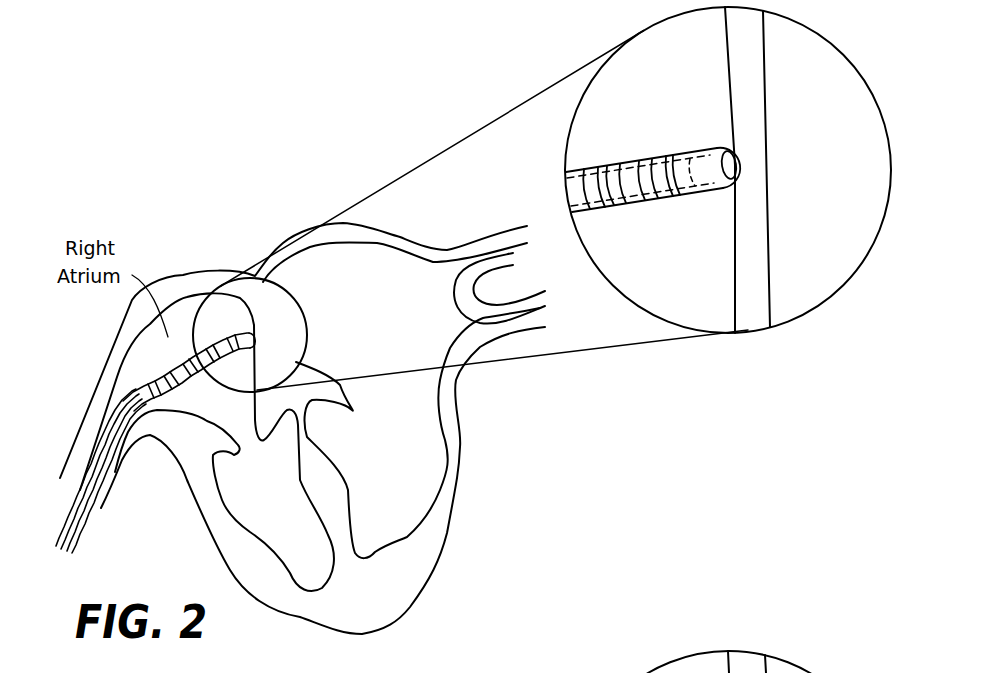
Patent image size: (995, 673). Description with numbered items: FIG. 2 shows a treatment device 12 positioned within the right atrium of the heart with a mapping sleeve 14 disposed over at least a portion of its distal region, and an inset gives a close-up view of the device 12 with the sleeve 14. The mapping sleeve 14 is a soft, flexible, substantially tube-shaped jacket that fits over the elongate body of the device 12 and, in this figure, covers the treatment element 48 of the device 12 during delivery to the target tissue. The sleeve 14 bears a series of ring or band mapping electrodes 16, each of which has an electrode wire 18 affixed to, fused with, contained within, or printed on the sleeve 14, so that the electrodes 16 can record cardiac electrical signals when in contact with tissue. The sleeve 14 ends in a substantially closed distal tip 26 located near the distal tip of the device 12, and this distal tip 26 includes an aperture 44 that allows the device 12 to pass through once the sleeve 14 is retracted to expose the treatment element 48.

The treatment device 12 is at (67, 515).
The mapping sleeve 14 is at (83, 513).
The mapping electrodes 16 is at (678, 182).
The electrode wire 18 is at (568, 172).
The distal tip 26 is at (734, 146).
The aperture 44 is at (740, 166).
The treatment element 48 is at (707, 152).